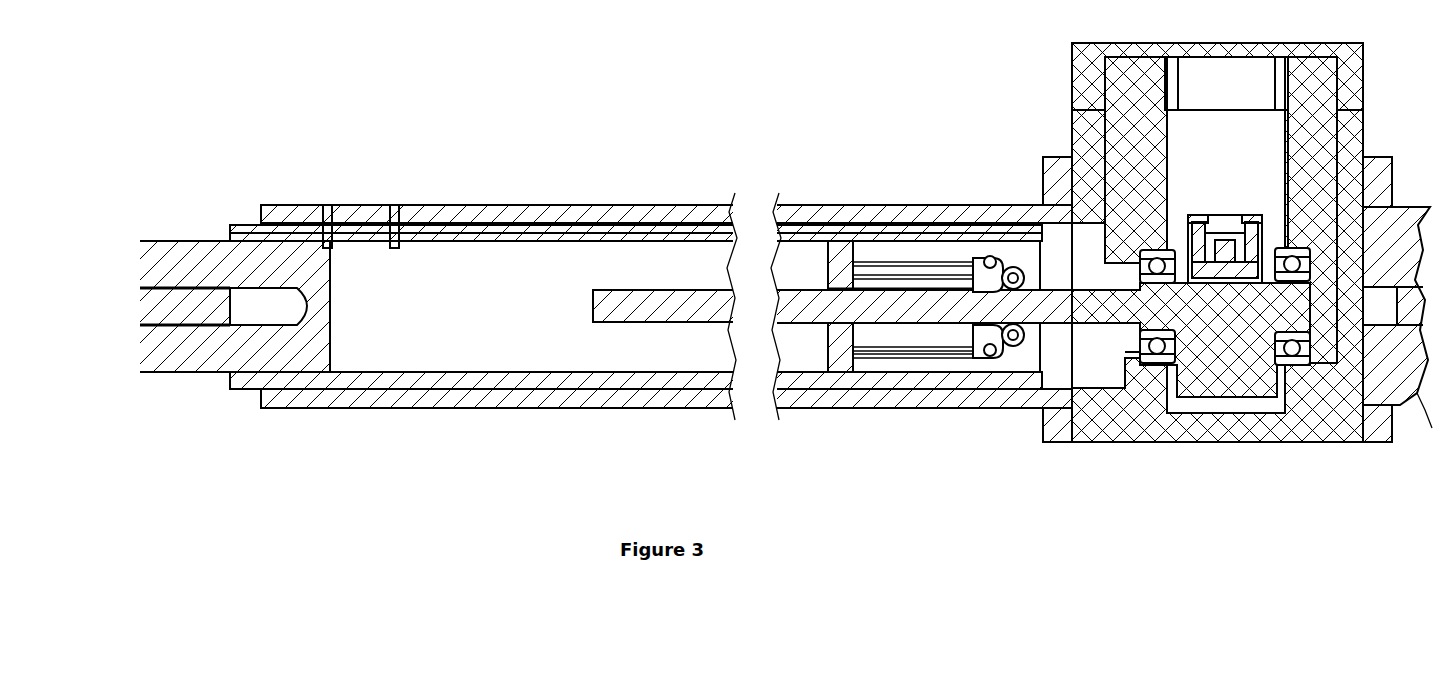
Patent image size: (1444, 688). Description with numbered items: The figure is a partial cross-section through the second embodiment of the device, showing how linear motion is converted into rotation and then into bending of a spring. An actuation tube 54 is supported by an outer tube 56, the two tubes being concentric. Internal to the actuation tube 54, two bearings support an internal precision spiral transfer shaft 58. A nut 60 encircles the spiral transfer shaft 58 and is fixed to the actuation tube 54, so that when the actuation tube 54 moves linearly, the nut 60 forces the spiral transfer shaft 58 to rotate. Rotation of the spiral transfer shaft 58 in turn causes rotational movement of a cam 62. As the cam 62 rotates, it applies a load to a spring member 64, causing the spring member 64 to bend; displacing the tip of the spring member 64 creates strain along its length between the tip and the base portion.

The actuation tube 54 is at (377, 382).
The outer tube 56 is at (492, 397).
The spiral transfer shaft 58 is at (638, 308).
The nut 60 is at (837, 355).
The cam 62 is at (1205, 352).
The spring member 64 is at (1283, 328).